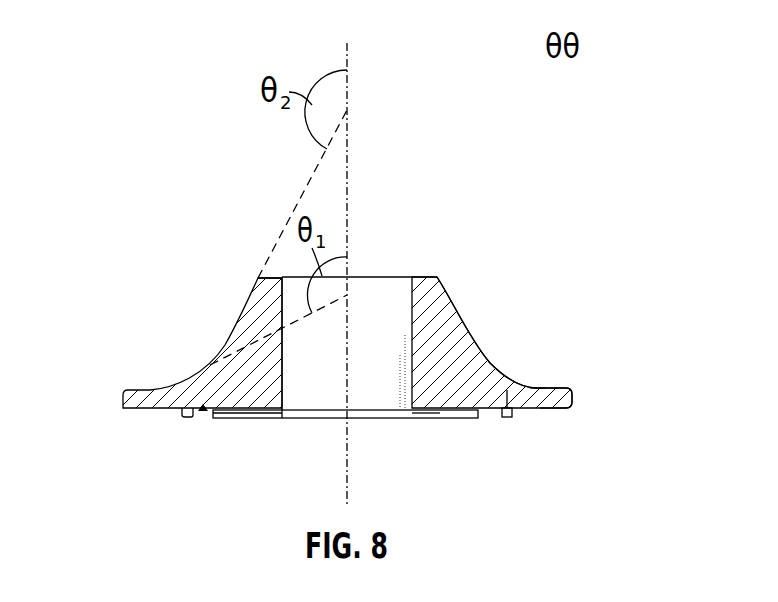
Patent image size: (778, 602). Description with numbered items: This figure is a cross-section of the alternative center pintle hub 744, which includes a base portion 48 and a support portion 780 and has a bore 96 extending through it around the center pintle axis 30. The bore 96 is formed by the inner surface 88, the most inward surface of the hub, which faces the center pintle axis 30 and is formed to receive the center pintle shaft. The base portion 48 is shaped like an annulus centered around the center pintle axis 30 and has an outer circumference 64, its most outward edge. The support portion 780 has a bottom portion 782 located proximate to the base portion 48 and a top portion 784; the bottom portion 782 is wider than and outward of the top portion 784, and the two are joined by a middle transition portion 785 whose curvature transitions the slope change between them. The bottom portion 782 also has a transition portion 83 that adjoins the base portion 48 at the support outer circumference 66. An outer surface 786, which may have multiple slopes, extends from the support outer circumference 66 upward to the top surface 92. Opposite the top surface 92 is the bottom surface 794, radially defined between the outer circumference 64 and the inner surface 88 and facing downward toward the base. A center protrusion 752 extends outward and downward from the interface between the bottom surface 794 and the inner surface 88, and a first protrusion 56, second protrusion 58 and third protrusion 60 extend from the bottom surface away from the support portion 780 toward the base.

The center pintle hub 744 is at (184, 232).
The support portion 780 is at (230, 353).
The inner surface 88 is at (288, 281).
The bore 96 is at (383, 295).
The top surface 92 is at (423, 277).
The top portion 784 is at (440, 278).
The outer surface 786 is at (453, 316).
The middle transition portion 785 is at (490, 367).
The transition portion 83 is at (537, 387).
The support outer circumference 66 is at (541, 387).
The outer circumference 64 is at (573, 400).
The base portion 48 is at (553, 409).
The bottom portion 782 is at (508, 398).
The third protrusion 60 is at (505, 411).
The second protrusion 58 is at (463, 418).
The center protrusion 752 is at (278, 417).
The first protrusion 56 is at (182, 416).
The bottom surface 794 is at (205, 413).
The center pintle axis 30 is at (347, 173).